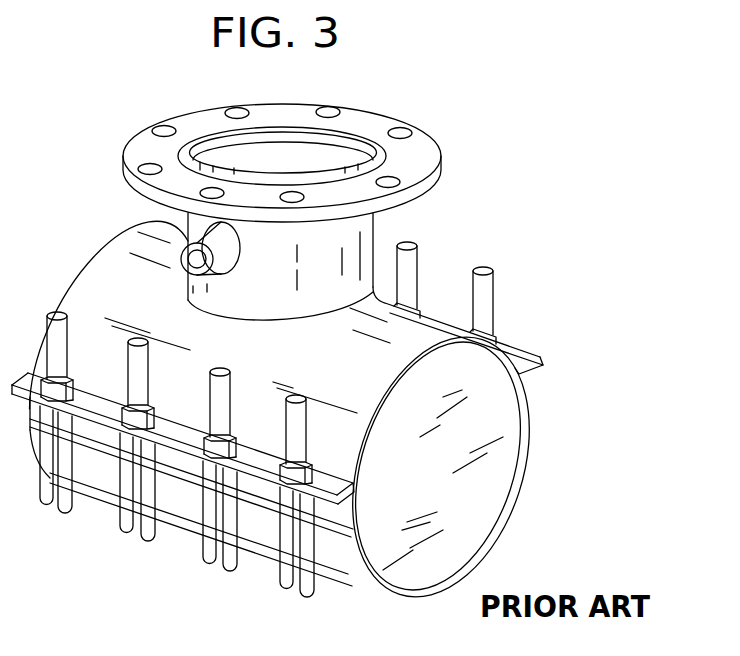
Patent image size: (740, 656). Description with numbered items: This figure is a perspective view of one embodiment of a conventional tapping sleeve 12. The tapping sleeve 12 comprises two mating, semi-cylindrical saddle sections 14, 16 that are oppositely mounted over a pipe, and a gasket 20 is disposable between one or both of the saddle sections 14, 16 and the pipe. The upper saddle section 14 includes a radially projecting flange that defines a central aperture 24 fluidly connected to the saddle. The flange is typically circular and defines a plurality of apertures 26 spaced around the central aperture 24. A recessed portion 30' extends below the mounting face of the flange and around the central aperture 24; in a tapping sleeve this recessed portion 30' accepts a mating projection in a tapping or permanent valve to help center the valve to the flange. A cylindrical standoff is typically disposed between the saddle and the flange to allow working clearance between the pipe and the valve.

The tapping sleeve 12 is at (108, 118).
The saddle section 14 is at (107, 248).
The saddle section 16 is at (332, 582).
The gasket 20 is at (487, 487).
The central aperture 24 is at (273, 147).
The apertures 26 is at (335, 110).
The recessed portion 30' is at (272, 119).